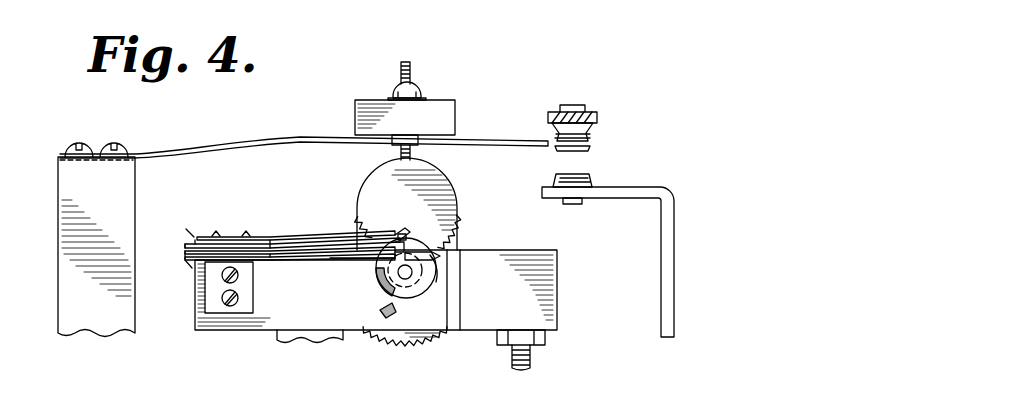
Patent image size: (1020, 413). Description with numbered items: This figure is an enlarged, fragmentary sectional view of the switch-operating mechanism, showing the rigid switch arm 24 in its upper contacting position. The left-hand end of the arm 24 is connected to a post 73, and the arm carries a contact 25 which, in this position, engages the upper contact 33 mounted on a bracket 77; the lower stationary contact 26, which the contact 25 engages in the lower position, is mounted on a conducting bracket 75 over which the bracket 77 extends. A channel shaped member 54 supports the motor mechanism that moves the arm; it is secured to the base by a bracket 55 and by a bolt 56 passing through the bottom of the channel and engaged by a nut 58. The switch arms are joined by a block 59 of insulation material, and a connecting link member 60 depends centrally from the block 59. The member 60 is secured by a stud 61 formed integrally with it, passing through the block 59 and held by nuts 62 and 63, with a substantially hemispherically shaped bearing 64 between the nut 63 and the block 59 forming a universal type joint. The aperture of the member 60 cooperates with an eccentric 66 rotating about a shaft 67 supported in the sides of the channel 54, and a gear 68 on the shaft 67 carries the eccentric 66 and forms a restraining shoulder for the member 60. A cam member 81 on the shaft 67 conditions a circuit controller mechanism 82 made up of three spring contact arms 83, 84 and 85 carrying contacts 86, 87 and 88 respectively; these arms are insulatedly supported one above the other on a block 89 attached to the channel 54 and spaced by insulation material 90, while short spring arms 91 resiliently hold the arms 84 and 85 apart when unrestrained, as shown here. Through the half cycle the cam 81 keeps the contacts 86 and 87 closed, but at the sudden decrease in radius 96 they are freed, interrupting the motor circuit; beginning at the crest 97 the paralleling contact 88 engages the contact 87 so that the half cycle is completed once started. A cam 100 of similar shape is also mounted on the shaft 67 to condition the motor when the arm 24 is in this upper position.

The rigid switch arm 24 is at (516, 138).
The contact 25 is at (594, 147).
The stationary contact 26 is at (592, 180).
The contact 33 is at (596, 132).
The channel shaped member 54 is at (549, 292).
The bracket 55 is at (312, 344).
The bolt 56 is at (532, 362).
The nut 58 is at (547, 339).
The block 59 is at (456, 113).
The connecting link member 60 is at (437, 180).
The stud 61 is at (411, 65).
The nut 62 is at (419, 95).
The nut 63 is at (419, 144).
The hemispherically shaped bearing 64 is at (394, 94).
The eccentric 66 is at (461, 230).
The shaft 67 is at (397, 284).
The gear 68 is at (401, 348).
The post 73 is at (58, 203).
The conducting bracket 75 is at (667, 268).
The bracket 77 is at (598, 116).
The cam member 81 is at (425, 292).
The circuit controller mechanism 82 is at (282, 225).
The spring contact arm 83 is at (277, 262).
The spring contact arm 84 is at (307, 249).
The spring contact arm 85 is at (292, 240).
The contact 86 is at (397, 270).
The contact 87 is at (403, 235).
The contact 88 is at (398, 232).
The block 89 is at (212, 292).
The insulation material 90 is at (192, 261).
The short spring arms 91 is at (197, 240).
The sudden decrease in radius 96 is at (430, 260).
The crest 97 is at (440, 293).
The cam 100 is at (384, 318).